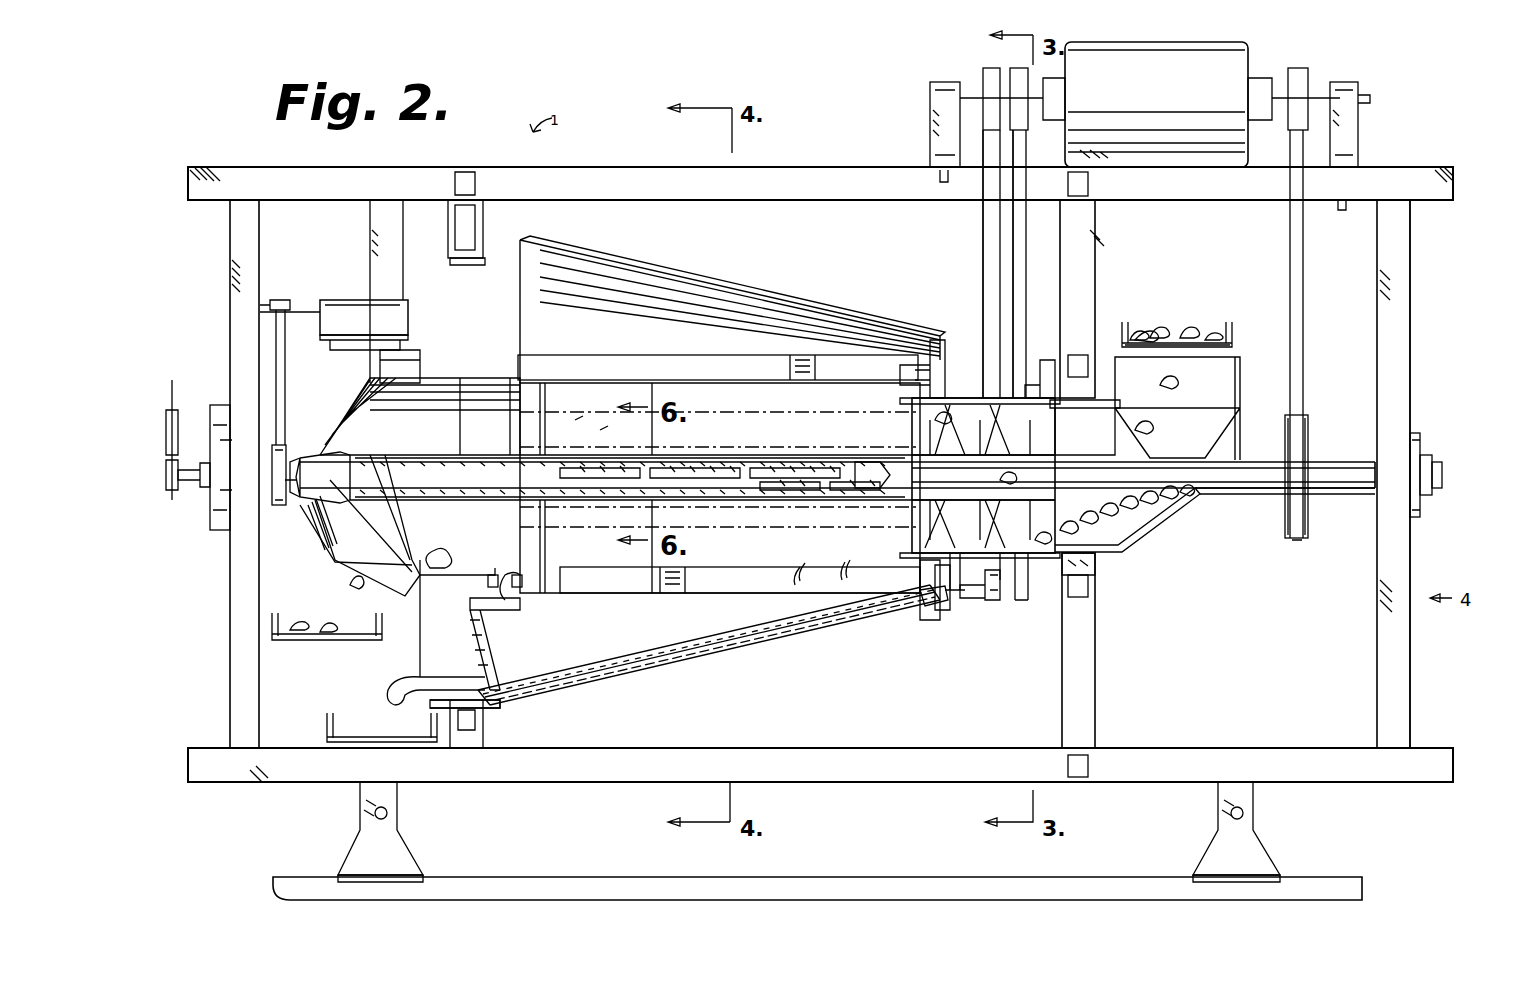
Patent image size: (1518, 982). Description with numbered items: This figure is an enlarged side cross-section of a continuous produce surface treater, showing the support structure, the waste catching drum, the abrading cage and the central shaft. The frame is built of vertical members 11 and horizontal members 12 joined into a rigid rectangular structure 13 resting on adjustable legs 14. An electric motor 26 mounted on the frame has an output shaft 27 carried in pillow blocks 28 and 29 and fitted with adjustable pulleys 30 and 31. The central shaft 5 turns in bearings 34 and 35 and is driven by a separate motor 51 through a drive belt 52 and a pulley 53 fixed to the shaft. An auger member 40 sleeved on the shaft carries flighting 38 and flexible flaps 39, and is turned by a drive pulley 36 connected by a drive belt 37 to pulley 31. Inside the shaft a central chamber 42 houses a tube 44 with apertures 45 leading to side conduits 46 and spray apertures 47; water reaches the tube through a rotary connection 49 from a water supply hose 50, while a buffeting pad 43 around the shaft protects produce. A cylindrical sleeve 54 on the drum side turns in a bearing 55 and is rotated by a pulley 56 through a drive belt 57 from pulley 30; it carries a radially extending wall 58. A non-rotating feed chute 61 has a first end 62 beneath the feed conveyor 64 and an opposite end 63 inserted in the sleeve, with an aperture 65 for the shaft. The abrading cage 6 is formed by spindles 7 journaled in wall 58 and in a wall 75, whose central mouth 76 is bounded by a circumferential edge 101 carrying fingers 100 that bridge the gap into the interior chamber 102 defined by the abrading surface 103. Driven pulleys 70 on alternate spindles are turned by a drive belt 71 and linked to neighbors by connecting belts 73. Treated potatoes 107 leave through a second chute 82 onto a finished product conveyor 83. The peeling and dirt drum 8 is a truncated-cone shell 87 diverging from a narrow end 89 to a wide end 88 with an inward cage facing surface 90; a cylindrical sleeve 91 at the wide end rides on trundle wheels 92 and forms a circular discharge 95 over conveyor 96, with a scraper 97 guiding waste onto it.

The central shaft 5 is at (283, 440).
The produce abrading cage 6 is at (639, 604).
The spindles 7 is at (700, 350).
The peeling and dirt drum 8 is at (783, 655).
The vertical members 11 is at (260, 245).
The horizontal members 12 is at (720, 203).
The rectangular shaped structure 13 is at (1412, 295).
The foot 14 is at (412, 848).
The electric motor 26 is at (1248, 45).
The output shaft 27 is at (1368, 92).
The pillow block 28 is at (1358, 133).
The pillow block 29 is at (968, 71).
The pulley 30 is at (1020, 60).
The pulley 31 is at (1308, 62).
The bearing 34 is at (1420, 430).
The bearing 35 is at (222, 420).
The drive pulley 36 is at (1310, 528).
The drive belt 37 is at (1306, 350).
The flighting 38 is at (928, 530).
The flexible strips or flaps 39 is at (898, 410).
The auger member 40 is at (950, 420).
The central chamber 42 is at (877, 448).
The buffeting pad 43 is at (798, 450).
The tube 44 is at (830, 492).
The apertures 45 is at (675, 452).
The side conduits 46 is at (765, 490).
The spray apertures 47 is at (565, 452).
The rotary connection 49 is at (173, 495).
The water supply hose 50 is at (168, 400).
The motor 51 is at (340, 298).
The drive belt 52 is at (280, 367).
The pulley 53 is at (290, 500).
The cylindrical sleeve 54 is at (1044, 360).
The bearing 55 is at (1096, 565).
The pulley 56 is at (1010, 568).
The drive belt 57 is at (1005, 270).
The wall 58 is at (945, 620).
The feed chute 61 is at (1160, 525).
The first end 62 is at (1240, 360).
The opposite end 63 is at (1068, 410).
The conveyor 64 is at (1140, 320).
The aperture 65 is at (1200, 490).
The driven pulley 70 is at (985, 605).
The drive belt 71 is at (978, 250).
The connecting belts 73 is at (940, 350).
The wall 75 is at (470, 603).
The central mouth 76 is at (504, 540).
The second chute 82 is at (418, 548).
The finished product conveyor 83 is at (310, 643).
The shell 87 is at (658, 683).
The wide end 88 is at (540, 700).
The narrow end 89 is at (915, 628).
The cage facing surface 90 is at (718, 665).
The cylindrical sleeve 91 is at (400, 316).
The trundle wheels 92 is at (483, 228).
The circular discharge 95 is at (422, 634).
The conveyor 96 is at (352, 710).
The scraper 97 is at (390, 673).
The fingers 100 is at (548, 395).
The circumferential edge 101 is at (505, 404).
The interior chamber 102 is at (780, 592).
The abrading surface 103 is at (852, 593).
The potatoes 107 is at (1195, 325).